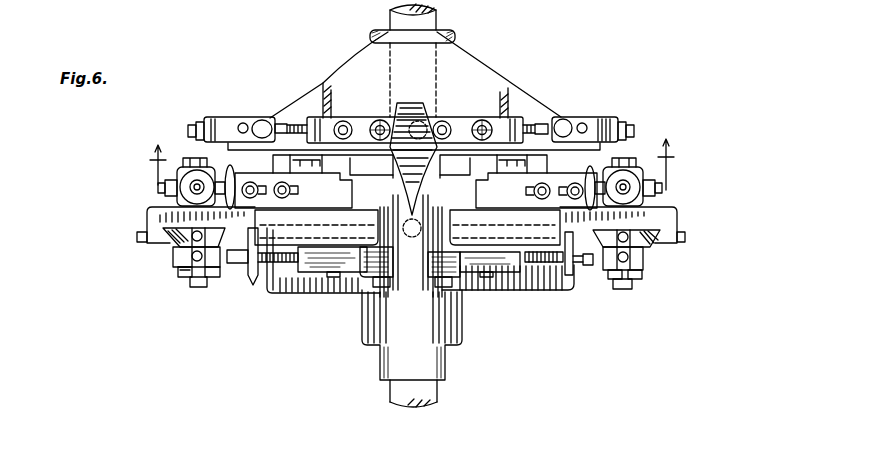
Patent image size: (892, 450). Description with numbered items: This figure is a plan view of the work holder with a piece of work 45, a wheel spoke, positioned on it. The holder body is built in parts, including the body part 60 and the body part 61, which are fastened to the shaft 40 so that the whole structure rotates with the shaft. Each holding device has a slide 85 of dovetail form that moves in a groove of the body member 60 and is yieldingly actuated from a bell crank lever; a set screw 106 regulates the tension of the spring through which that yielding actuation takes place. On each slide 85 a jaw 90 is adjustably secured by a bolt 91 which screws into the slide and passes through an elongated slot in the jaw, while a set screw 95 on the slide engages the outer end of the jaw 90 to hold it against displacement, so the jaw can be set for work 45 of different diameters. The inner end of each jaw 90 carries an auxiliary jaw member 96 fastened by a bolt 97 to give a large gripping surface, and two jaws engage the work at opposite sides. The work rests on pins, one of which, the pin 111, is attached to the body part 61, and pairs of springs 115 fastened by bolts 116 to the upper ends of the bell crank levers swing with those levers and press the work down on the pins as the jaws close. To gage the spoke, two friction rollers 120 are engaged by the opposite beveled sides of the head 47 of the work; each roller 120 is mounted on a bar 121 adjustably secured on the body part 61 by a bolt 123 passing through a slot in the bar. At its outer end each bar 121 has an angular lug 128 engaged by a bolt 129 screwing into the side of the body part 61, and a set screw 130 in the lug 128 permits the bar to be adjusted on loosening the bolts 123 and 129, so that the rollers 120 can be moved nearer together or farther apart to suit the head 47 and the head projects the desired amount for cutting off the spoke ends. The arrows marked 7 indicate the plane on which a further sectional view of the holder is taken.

The section line 7- 7 is at (413, 164).
The shaft 40 is at (438, 22).
The work 45 is at (440, 325).
The head 47 is at (414, 105).
The body part 60 is at (150, 213).
The body part 61 is at (478, 86).
The slide 85 is at (172, 245).
The jaw 90 is at (212, 260).
The bolt 91 is at (178, 272).
The set screw 95 is at (190, 258).
The auxiliary jaw member 96 is at (212, 278).
The bolt 97 is at (198, 288).
The set screw 106 is at (229, 178).
The pin 111 is at (425, 124).
The springs 115 is at (178, 172).
The bolts 116 is at (165, 188).
The friction rollers 120 is at (200, 119).
The bar 121 is at (372, 125).
The bolt 123 is at (215, 116).
The angular lug 128 is at (596, 118).
The bolt 129 is at (561, 119).
The set screw 130 is at (243, 123).